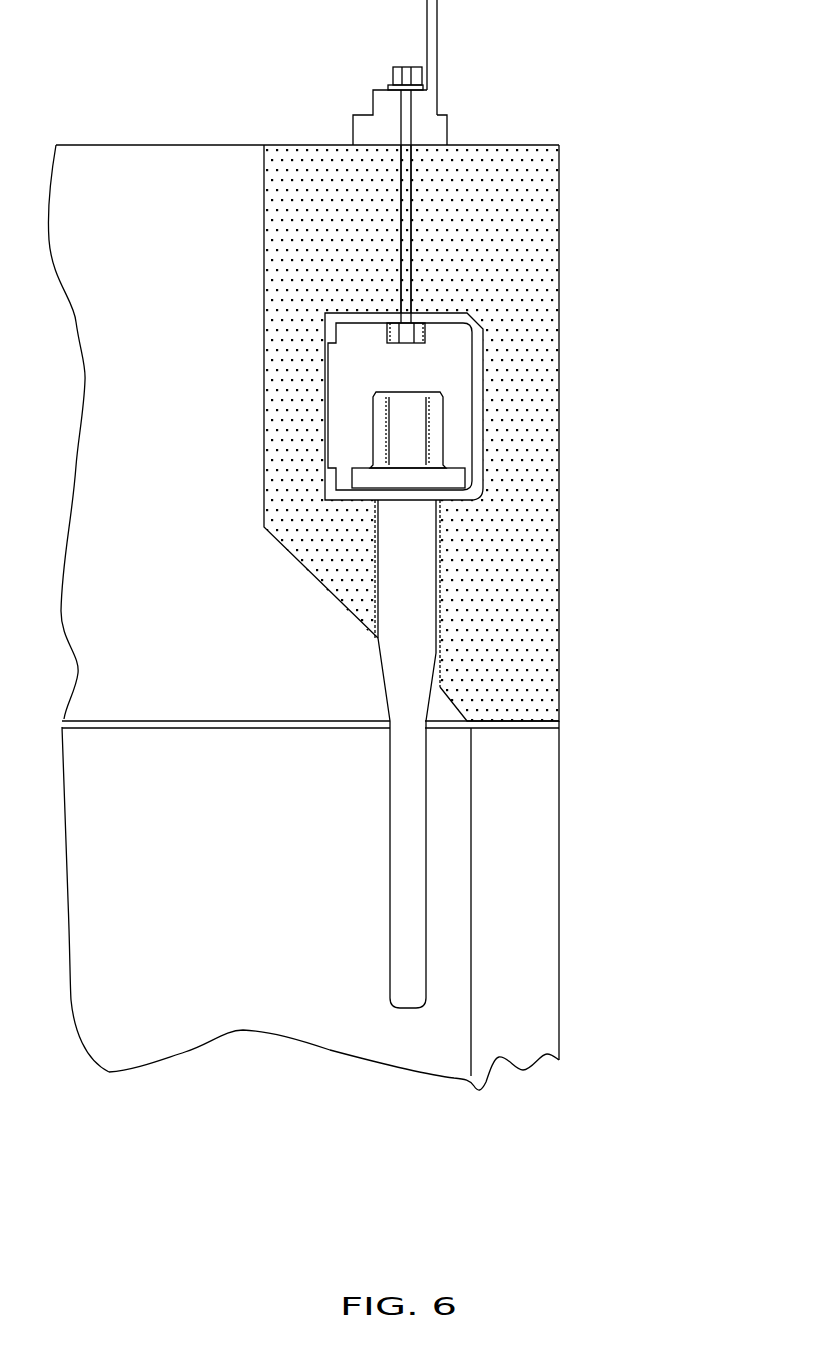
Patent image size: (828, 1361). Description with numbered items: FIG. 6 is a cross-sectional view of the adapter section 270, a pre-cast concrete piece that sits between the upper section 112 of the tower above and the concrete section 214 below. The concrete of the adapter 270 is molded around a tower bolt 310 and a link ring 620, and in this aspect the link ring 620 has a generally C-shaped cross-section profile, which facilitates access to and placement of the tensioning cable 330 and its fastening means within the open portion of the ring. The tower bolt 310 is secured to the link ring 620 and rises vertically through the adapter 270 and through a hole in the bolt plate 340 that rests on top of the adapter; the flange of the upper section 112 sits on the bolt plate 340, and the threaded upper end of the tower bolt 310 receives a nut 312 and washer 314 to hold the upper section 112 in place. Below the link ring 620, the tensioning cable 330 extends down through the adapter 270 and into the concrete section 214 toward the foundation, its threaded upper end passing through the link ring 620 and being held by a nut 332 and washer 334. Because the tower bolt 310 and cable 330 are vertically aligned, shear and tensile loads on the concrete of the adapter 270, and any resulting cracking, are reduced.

The upper section 112 is at (433, 17).
The nut 312 is at (420, 72).
The washer 314 is at (392, 80).
The bolt plate 340 is at (353, 128).
The tower bolt 310 is at (407, 223).
The link ring 620 is at (475, 365).
The nut 332 is at (440, 452).
The washer 334 is at (360, 478).
The adapter section 270 is at (535, 591).
The tensioning cable 330 is at (407, 879).
The concrete section 214 is at (528, 934).